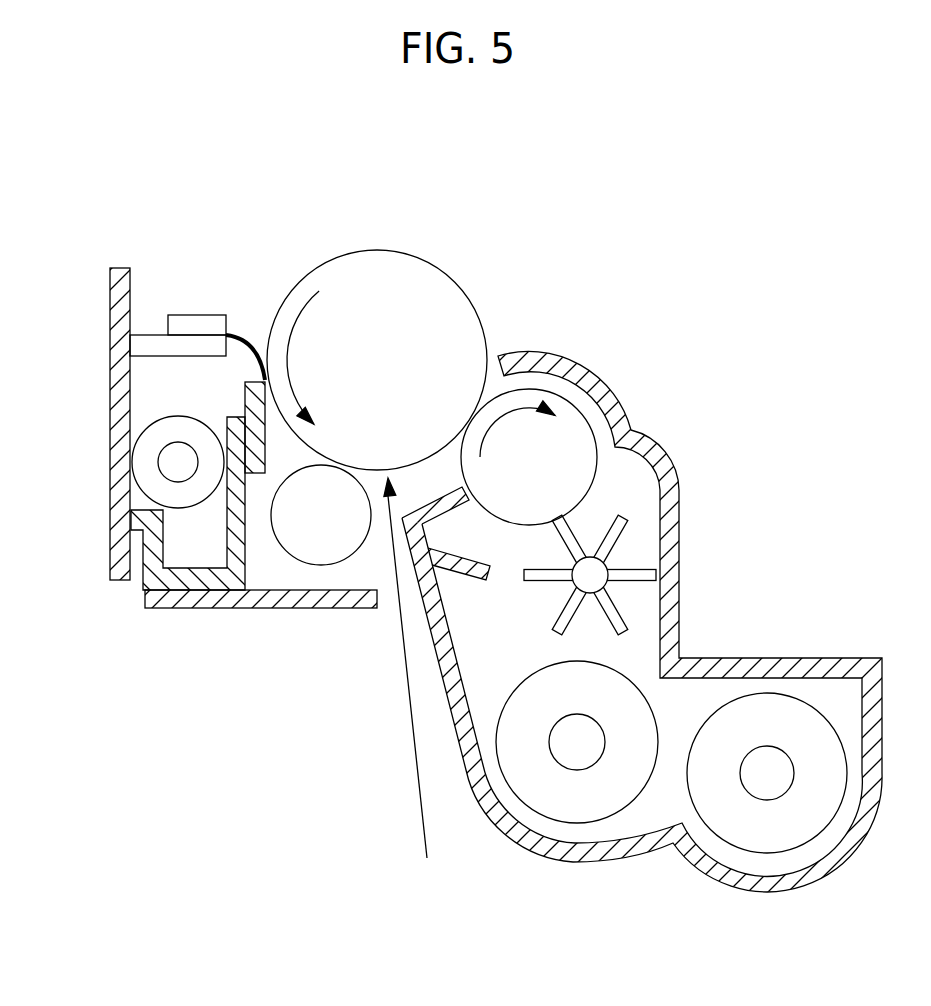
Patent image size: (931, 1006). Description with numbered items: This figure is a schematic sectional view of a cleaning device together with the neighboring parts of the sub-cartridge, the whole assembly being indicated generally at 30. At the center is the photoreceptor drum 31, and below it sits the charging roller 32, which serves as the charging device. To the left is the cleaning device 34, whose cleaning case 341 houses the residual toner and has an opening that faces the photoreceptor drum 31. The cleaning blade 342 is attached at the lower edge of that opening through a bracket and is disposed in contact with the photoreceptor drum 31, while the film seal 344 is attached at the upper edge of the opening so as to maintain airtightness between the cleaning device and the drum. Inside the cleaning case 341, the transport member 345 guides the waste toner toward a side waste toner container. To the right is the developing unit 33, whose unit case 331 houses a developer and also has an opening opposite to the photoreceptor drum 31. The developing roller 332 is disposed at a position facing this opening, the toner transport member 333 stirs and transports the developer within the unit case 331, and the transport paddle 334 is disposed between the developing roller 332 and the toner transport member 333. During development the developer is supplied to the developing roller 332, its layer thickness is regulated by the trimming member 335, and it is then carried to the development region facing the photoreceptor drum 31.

The image forming unit 30 is at (368, 211).
The photoreceptor drum 31 is at (434, 278).
The charging roller 32 is at (322, 553).
The developing unit 33 is at (603, 898).
The cleaning device 34 is at (214, 638).
The unit case 331 is at (672, 532).
The developing roller 332 is at (572, 430).
The toner transport member 333 is at (617, 800).
The transport paddle 334 is at (638, 582).
The trimming member 335 is at (452, 505).
The cleaning case 341 is at (120, 426).
The cleaning blade 342 is at (246, 382).
The film seal 344 is at (252, 338).
The transport member 345 is at (188, 497).